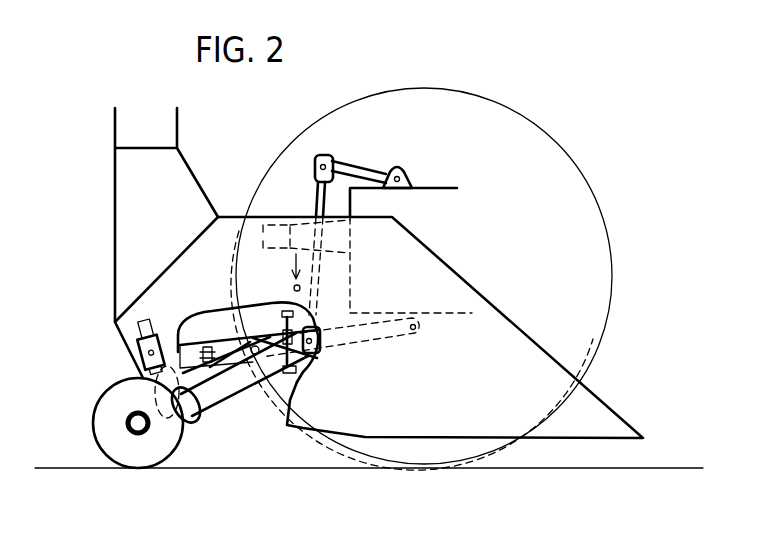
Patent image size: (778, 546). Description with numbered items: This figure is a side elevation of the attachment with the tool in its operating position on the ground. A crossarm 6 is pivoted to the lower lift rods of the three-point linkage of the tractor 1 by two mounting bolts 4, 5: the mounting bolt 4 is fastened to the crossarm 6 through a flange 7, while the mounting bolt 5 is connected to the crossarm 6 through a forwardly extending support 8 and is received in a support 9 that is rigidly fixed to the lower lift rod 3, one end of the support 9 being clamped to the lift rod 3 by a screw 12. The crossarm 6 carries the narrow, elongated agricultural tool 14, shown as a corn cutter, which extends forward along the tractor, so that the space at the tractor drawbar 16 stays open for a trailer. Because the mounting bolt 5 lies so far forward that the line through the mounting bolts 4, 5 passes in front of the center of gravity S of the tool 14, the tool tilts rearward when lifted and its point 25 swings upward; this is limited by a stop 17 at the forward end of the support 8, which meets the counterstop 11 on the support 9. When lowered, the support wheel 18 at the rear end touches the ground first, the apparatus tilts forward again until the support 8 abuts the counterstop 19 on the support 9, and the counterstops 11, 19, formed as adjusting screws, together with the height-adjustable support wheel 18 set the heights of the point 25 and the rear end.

The tractor 1 is at (440, 188).
The lower lift rod 3 is at (380, 340).
The mounting bolt 4 is at (172, 337).
The mounting bolt 5 is at (224, 385).
The crossarm 6 is at (190, 425).
The flange 7 is at (143, 383).
The support 8 is at (190, 420).
The support 9 is at (232, 337).
The counterstop 11 is at (277, 337).
The screw 12 is at (300, 368).
The agricultural implement or tool 14 is at (556, 439).
The tractor drawbar 16 is at (282, 223).
The stop 17 is at (283, 370).
The support wheel 18 is at (104, 441).
The counterstop 19 is at (207, 337).
The point of the tool 25 is at (648, 437).
The center of gravity S is at (286, 270).